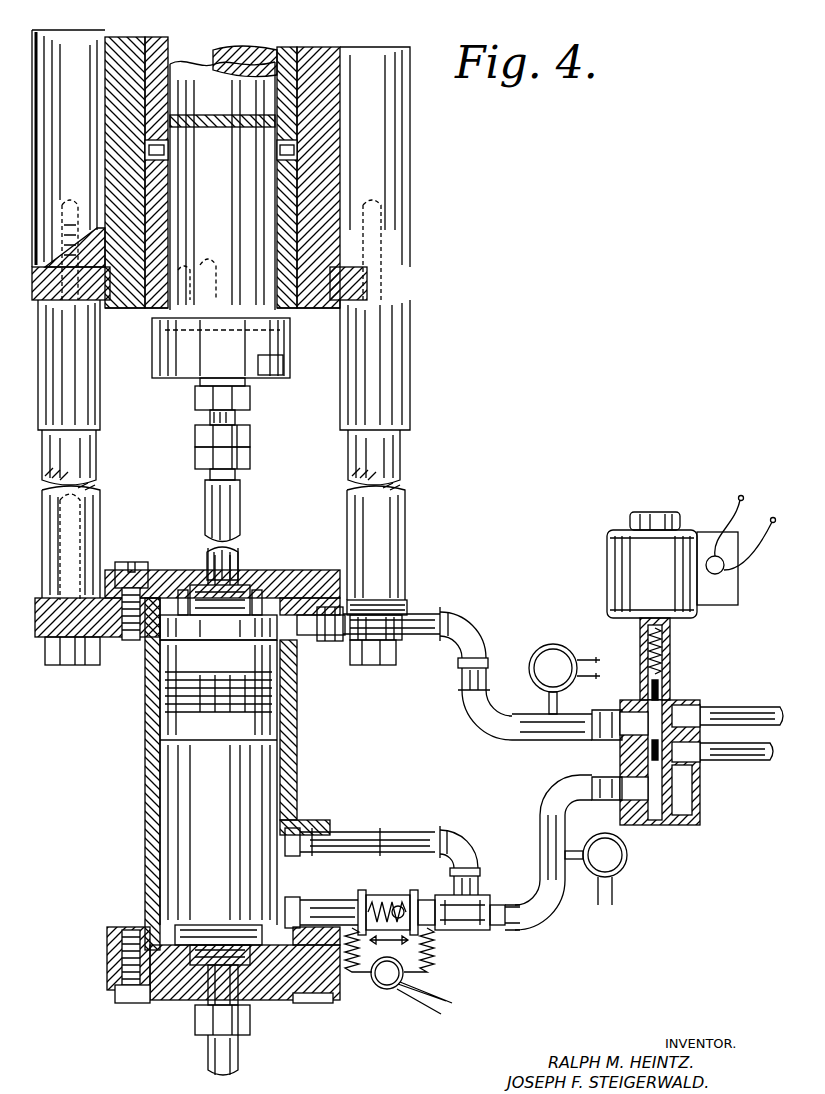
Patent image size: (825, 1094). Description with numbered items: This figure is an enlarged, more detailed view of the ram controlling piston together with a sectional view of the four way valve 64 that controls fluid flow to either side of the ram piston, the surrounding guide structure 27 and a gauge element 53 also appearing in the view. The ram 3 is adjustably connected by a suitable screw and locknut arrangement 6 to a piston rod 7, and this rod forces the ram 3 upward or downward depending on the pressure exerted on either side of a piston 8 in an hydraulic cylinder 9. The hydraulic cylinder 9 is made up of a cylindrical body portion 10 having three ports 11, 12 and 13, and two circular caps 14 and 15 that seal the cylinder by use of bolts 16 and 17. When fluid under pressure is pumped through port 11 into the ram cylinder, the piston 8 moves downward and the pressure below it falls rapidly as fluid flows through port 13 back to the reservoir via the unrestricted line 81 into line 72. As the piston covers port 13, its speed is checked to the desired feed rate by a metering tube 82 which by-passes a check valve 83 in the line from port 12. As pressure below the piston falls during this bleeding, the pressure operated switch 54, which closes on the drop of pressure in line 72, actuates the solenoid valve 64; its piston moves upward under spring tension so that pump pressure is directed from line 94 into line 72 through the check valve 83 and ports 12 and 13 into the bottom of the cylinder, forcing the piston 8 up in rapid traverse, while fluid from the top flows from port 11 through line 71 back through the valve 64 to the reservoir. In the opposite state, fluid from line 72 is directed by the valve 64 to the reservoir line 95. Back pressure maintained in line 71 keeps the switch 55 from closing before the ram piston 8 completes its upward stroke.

The ram 3 is at (255, 57).
The cylinder wall 27 is at (300, 305).
The screw and locknut arrangement 6 is at (252, 435).
The piston rod 7 is at (240, 513).
The bolts 16 is at (142, 562).
The circular cap 14 is at (305, 556).
The port 11 is at (316, 632).
The piston 8 is at (180, 728).
The hydraulic cylinder 9 is at (136, 804).
The cylindrical body portion 10 is at (150, 857).
The port 12 is at (360, 832).
The port 13 is at (325, 900).
The circular cap 15 is at (278, 990).
The bolts 17 is at (122, 995).
The unrestricted line 81 is at (448, 834).
The metering tube 82 is at (432, 965).
The check valve 83 is at (392, 892).
The gauge 53 is at (405, 984).
The pressure operated switch 54 is at (627, 856).
The switch 55 is at (553, 644).
The line 71 is at (530, 738).
The line 72 is at (545, 833).
The four way valve 64 is at (655, 512).
The line 94 is at (742, 710).
The reservoir line 95 is at (740, 760).